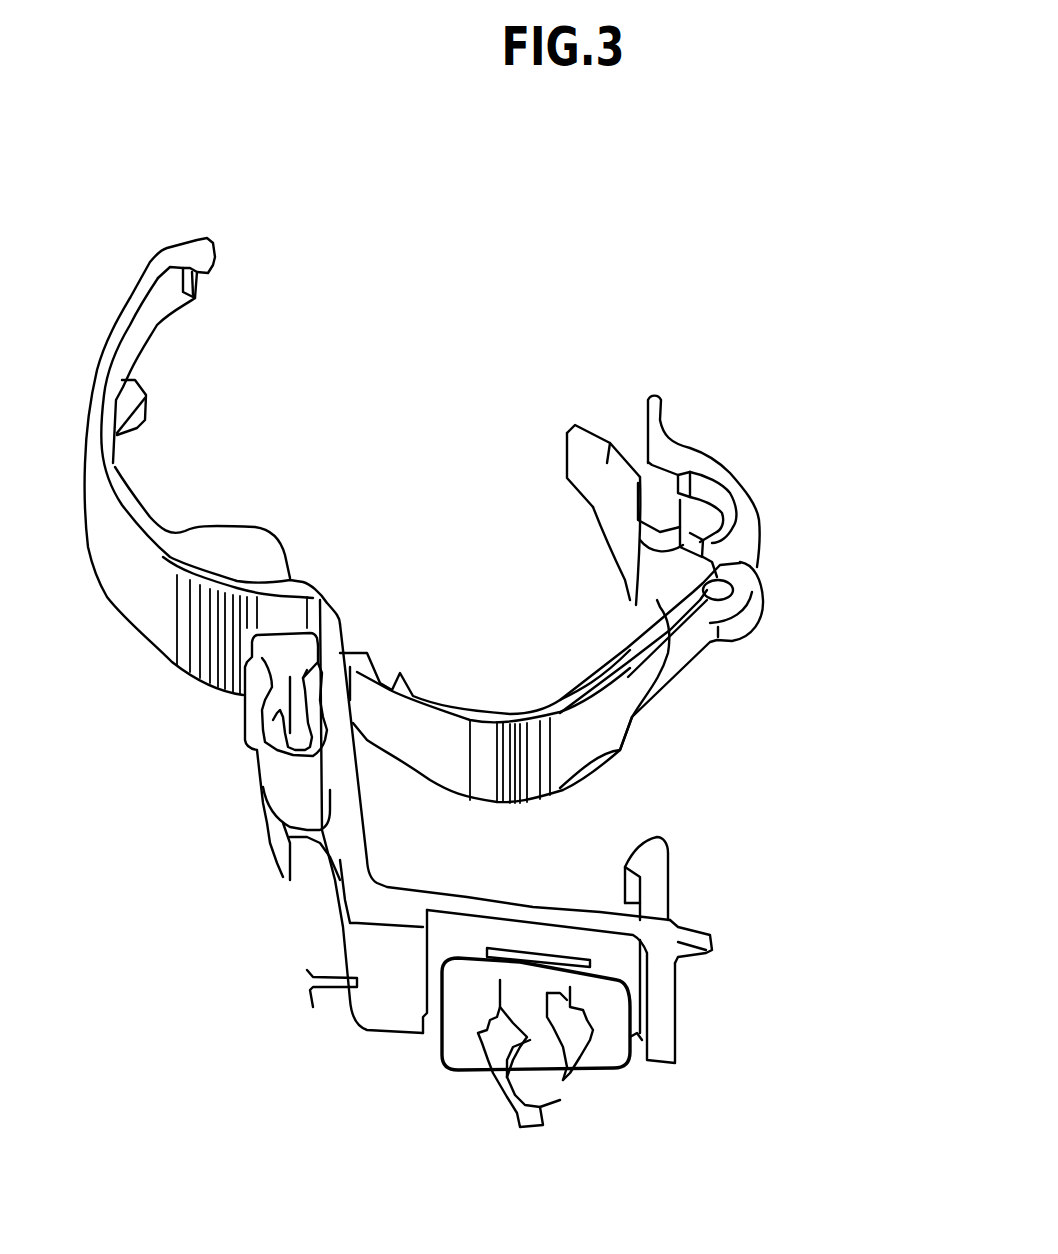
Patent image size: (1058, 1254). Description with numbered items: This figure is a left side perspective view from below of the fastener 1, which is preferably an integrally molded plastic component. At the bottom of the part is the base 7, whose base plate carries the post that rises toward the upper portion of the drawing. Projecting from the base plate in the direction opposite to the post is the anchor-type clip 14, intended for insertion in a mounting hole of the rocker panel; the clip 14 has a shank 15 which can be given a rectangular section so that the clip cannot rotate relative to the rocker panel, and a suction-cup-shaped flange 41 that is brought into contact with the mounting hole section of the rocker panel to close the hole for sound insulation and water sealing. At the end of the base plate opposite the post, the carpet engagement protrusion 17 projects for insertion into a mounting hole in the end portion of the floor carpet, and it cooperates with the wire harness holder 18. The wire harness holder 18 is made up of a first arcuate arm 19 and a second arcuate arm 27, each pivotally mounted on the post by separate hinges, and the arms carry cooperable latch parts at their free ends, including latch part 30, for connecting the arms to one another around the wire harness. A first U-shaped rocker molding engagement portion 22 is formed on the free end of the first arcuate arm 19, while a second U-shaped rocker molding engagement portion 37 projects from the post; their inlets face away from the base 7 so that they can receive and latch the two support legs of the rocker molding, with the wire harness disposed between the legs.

The fastener 1 is at (777, 437).
The base 7 is at (357, 950).
The anchor-type clip 14 is at (503, 1092).
The shank 15 is at (460, 1057).
The carpet engagement protrusion 17 is at (668, 892).
The wire harness holder 18 is at (348, 443).
The first arcuate arm 19 is at (583, 685).
The first U-shaped rocker molding engagement portion 22 is at (671, 428).
The second arcuate arm 27 is at (167, 547).
The latch part 30 is at (207, 282).
The second U-shaped rocker molding engagement portion 37 is at (252, 768).
The suction-cup-shaped flange 41 is at (500, 955).